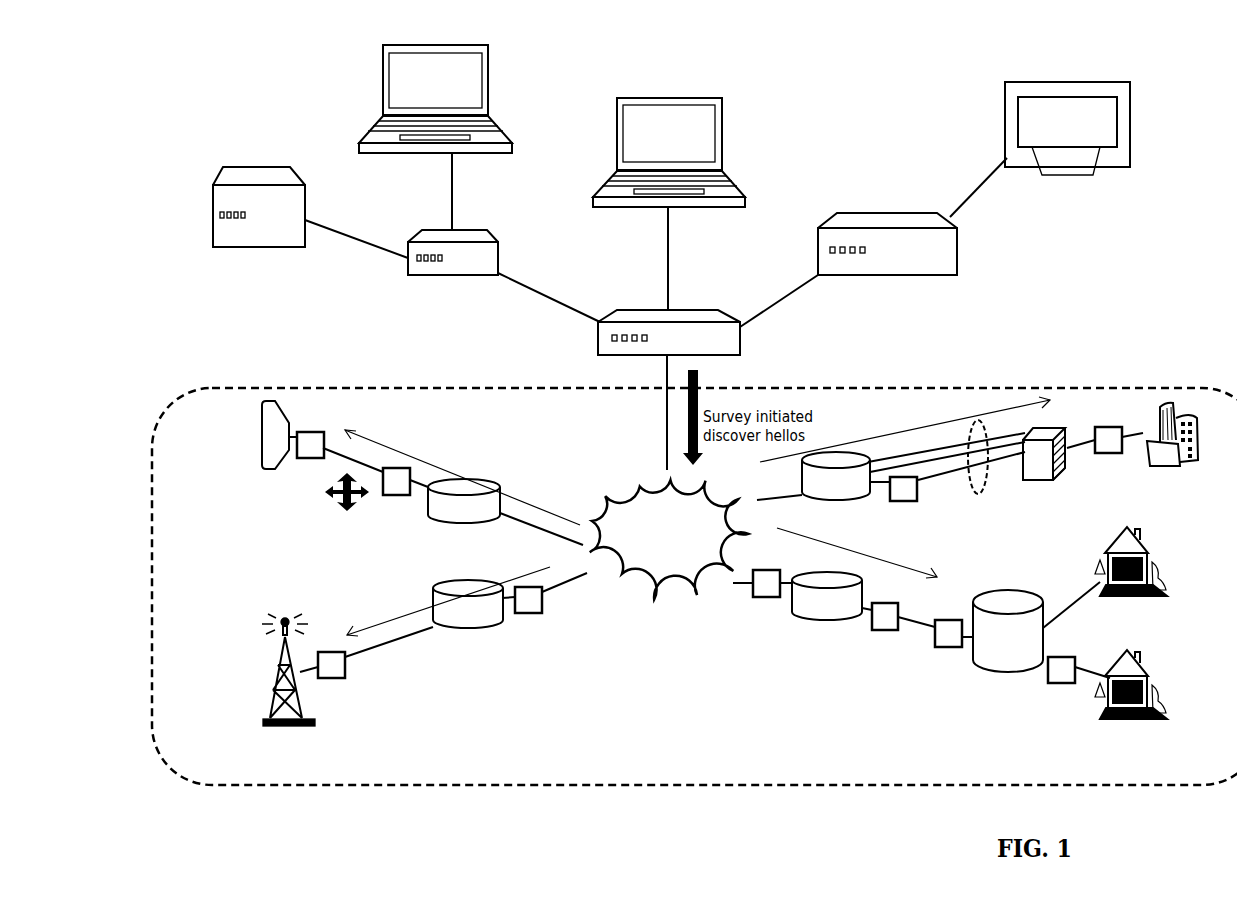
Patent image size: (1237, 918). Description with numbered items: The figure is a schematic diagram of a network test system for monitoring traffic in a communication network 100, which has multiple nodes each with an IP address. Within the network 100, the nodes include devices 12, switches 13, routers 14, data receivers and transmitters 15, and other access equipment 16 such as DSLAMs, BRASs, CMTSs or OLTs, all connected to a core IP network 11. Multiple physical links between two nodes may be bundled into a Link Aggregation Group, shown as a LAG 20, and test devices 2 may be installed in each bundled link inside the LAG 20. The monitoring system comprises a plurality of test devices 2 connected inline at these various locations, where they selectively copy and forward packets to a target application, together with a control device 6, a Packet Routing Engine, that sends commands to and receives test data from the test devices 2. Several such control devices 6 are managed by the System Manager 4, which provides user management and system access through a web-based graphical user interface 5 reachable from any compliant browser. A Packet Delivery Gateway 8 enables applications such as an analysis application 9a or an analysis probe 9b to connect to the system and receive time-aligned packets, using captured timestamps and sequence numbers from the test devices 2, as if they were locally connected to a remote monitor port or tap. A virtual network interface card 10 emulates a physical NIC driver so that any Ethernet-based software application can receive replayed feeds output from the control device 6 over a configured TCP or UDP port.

The test device 2 is at (312, 460).
The System Manager 4 is at (887, 244).
The web-based graphical user interface 5 is at (1067, 128).
The control device 6 is at (669, 332).
The Packet Delivery Gateway 8 is at (453, 252).
The analysis application 9a is at (259, 207).
The analysis probe 9b is at (435, 99).
The virtual network interface card 10 is at (669, 152).
The core IP network 11 is at (669, 539).
The device 12 is at (649, 540).
The switch 13 is at (1044, 454).
The router 14 is at (1008, 631).
The data receiver and transmitter 15 is at (268, 688).
The access equipment 16 is at (275, 435).
The Link Aggregation Group 20 is at (983, 490).
The communication network 100 is at (630, 785).